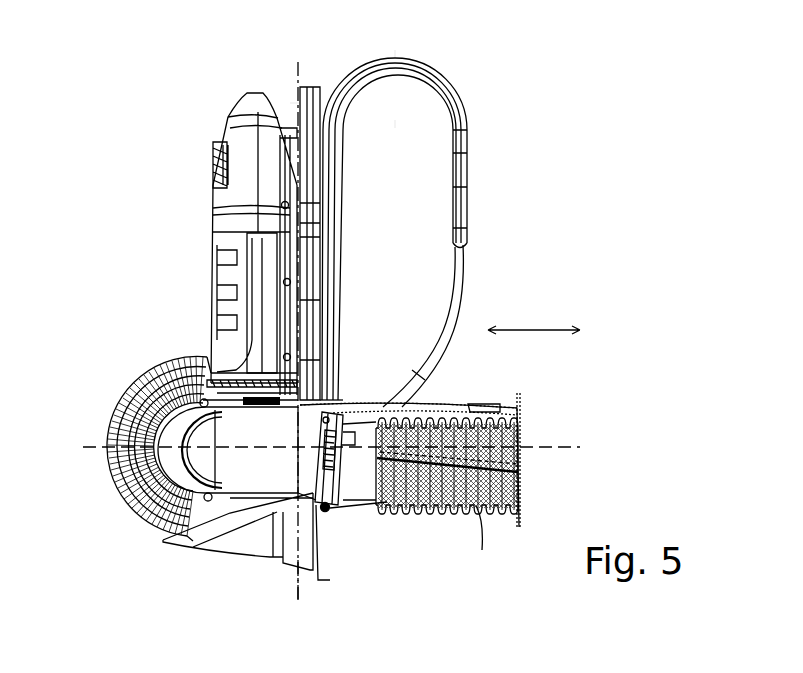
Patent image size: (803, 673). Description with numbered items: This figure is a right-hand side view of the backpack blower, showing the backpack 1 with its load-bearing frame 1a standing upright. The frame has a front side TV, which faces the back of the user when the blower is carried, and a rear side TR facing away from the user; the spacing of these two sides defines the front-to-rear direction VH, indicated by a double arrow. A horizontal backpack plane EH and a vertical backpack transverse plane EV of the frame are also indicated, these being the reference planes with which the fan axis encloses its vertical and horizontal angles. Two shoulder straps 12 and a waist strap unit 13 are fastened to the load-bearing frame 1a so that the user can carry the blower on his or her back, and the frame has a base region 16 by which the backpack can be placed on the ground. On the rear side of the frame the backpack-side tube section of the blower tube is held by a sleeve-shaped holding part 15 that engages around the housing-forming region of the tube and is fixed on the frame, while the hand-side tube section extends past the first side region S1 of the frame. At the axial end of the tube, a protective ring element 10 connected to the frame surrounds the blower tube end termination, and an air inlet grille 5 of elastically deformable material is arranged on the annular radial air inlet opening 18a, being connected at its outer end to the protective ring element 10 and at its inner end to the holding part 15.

The backpack 1 is at (500, 78).
The load-bearing frame 1a is at (305, 87).
The protective ring element 10 is at (128, 385).
The sleeve-shaped holding part 15 is at (158, 450).
The radial air inlet opening 18a is at (118, 487).
The air inlet grille 5 is at (133, 513).
The base region 16 is at (255, 537).
The shoulder straps 12 is at (455, 310).
The waist strap unit 13 is at (470, 403).
The first side region S1 is at (313, 317).
The rear side TR is at (308, 104).
The front side TV is at (290, 103).
The front-to-rear direction VH is at (540, 328).
The horizontal backpack plane EH is at (535, 444).
The vertical backpack transverse plane EV is at (300, 580).